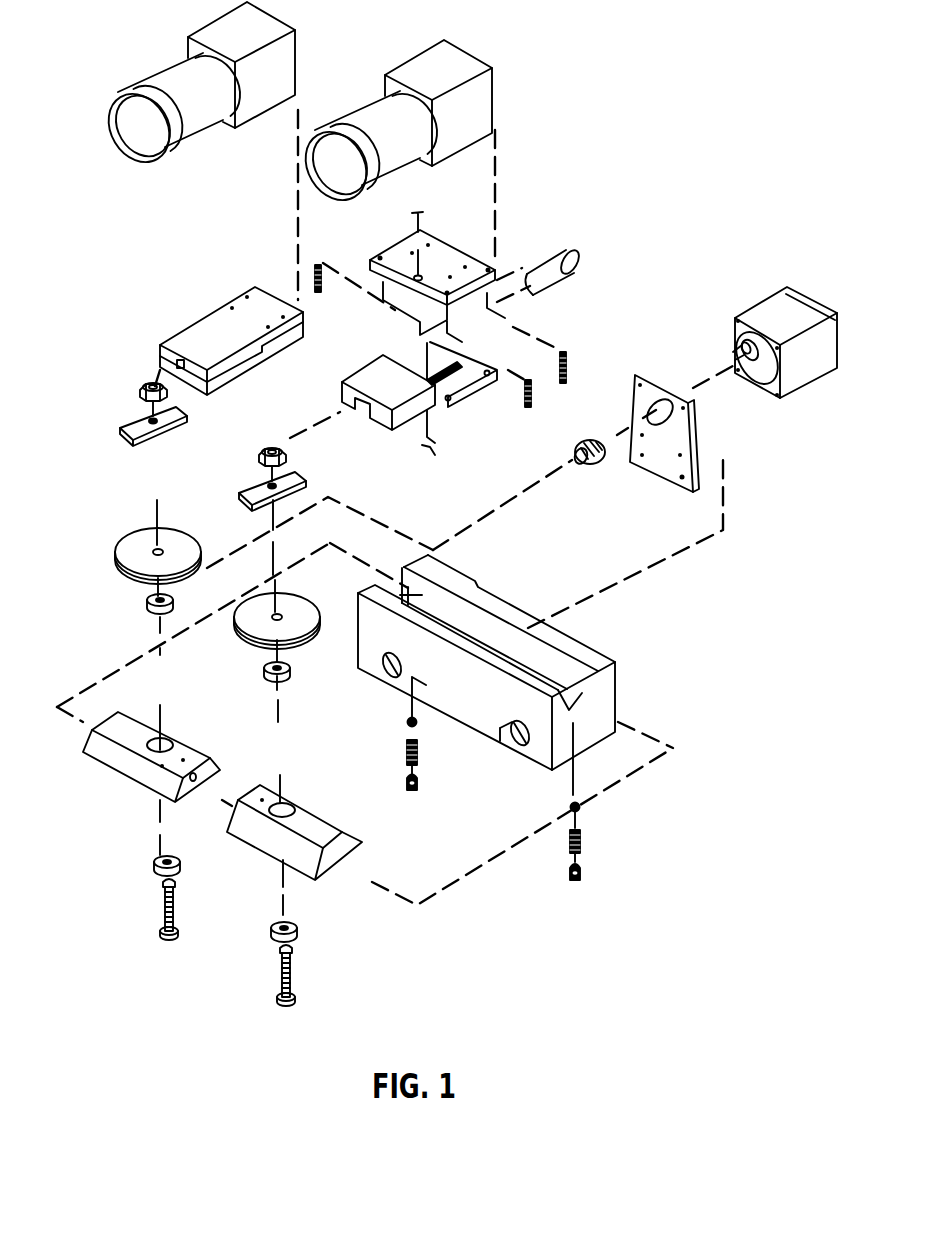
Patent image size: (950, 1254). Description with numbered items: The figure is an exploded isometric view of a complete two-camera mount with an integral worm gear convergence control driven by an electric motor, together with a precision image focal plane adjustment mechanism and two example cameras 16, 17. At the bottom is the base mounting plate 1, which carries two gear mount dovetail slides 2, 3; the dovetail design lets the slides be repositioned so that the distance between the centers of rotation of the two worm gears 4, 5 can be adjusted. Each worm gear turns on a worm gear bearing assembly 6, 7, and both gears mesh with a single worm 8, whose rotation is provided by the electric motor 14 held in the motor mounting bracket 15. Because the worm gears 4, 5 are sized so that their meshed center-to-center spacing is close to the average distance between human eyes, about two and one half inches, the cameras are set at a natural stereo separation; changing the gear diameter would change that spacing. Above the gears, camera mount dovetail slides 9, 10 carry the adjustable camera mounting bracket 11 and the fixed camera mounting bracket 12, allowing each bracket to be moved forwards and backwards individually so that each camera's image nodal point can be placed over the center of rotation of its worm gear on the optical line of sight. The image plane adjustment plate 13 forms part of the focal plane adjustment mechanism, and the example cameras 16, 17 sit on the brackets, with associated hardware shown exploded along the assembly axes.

The base mounting plate 1 is at (623, 685).
The gear mount dovetail slide 2 is at (250, 853).
The gear mount dovetail slide 3 is at (117, 778).
The worm gear 4 is at (310, 643).
The worm gear 5 is at (112, 572).
The worm gear bearing assembly 6 is at (307, 975).
The worm gear bearing assembly 7 is at (150, 918).
The worm 8 is at (598, 468).
The camera mount dovetail slide 9 is at (310, 473).
The camera mount dovetail slide 10 is at (113, 435).
The adjustable camera mounting bracket 11 is at (463, 408).
The fixed camera mounting bracket 12 is at (250, 377).
The image plane adjustment plate 13 is at (460, 242).
The electric motor 14 is at (812, 390).
The motor mounting bracket 15 is at (700, 428).
The example camera 16 is at (503, 95).
The example camera 17 is at (307, 53).